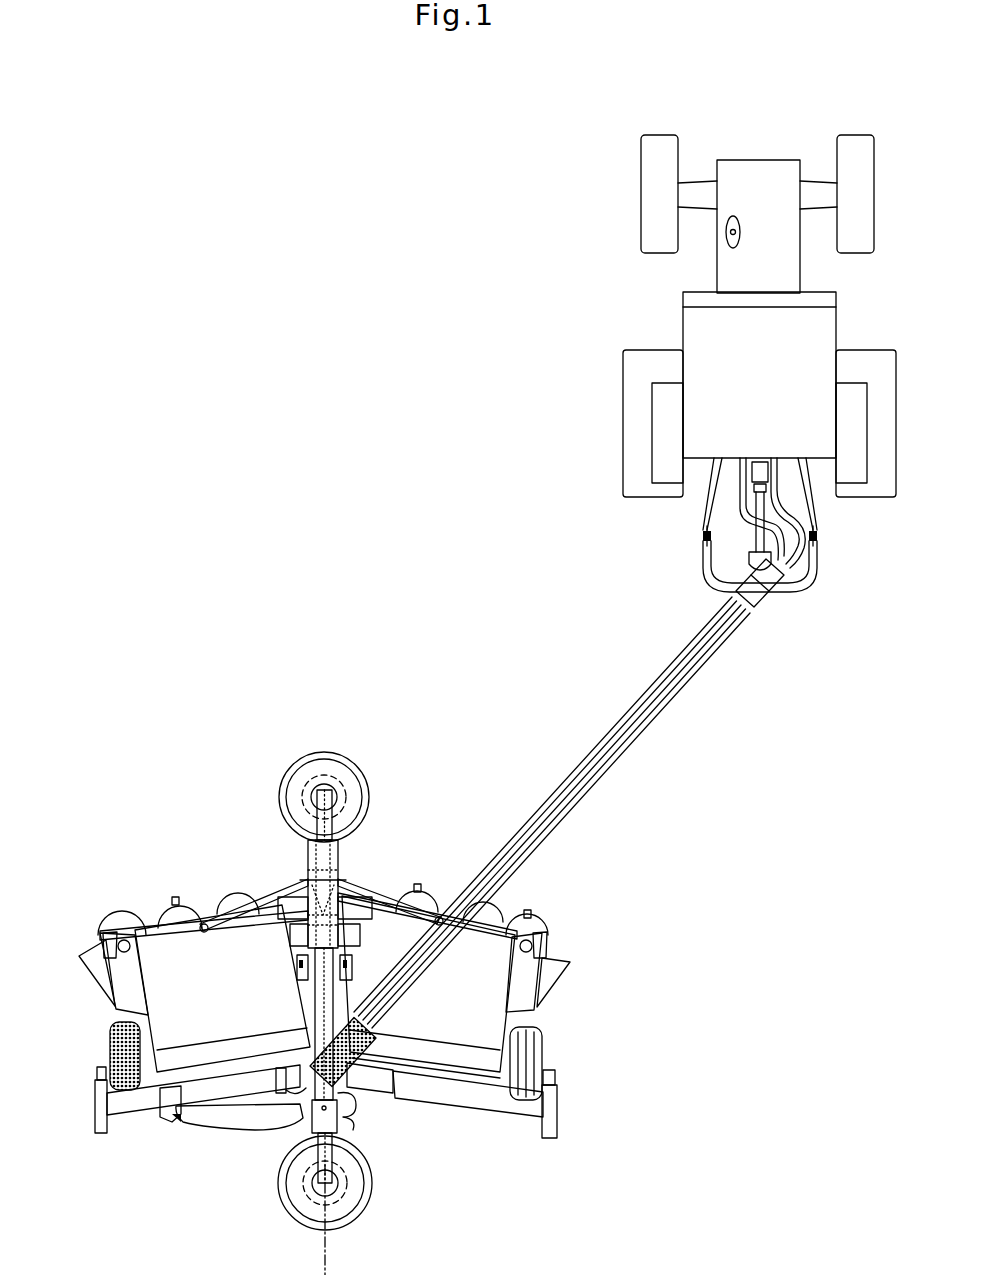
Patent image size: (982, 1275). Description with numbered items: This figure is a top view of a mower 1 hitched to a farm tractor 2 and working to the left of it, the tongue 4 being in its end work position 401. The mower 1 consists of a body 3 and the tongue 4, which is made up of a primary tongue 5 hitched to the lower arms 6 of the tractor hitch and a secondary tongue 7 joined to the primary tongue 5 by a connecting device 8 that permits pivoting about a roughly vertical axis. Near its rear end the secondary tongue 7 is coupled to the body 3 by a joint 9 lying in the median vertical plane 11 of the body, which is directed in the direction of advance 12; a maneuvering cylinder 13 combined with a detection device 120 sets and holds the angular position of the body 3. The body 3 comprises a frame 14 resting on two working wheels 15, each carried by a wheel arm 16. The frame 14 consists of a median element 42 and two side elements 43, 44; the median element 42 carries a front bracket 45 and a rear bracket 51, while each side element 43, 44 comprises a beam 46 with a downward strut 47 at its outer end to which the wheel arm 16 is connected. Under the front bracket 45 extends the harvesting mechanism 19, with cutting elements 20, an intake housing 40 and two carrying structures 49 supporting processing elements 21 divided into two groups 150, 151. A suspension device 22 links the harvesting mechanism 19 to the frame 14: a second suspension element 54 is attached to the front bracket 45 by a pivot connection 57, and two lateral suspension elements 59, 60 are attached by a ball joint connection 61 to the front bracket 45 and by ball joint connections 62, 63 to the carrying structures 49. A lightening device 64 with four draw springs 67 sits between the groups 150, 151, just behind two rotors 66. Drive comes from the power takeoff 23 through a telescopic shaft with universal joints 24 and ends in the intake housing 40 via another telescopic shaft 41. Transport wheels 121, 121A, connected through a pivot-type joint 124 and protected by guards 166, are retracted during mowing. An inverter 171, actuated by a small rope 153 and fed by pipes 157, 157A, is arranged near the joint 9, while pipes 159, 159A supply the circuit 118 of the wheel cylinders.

The mower 1 is at (355, 568).
The farm tractor 2 is at (690, 324).
The body 3 is at (626, 906).
The tongue 4 is at (644, 757).
The end work position (left) 401 is at (699, 750).
The primary tongue 5 is at (703, 560).
The lower arms 6 is at (706, 506).
The secondary tongue 7 is at (548, 807).
The connecting device 8 is at (732, 594).
The joint 9 is at (396, 1096).
The median vertical plane 11 is at (318, 1262).
The direction of advance 12 is at (171, 275).
The maneuvering cylinder 13 is at (200, 1118).
The frame 14 is at (451, 1118).
The working wheels 15 is at (110, 1032).
The wheel arm 16 is at (96, 1068).
The harvesting mechanism 19 is at (415, 797).
The cutting elements 20 is at (100, 930).
The processing elements 21 is at (136, 1015).
The suspension device 22 is at (247, 893).
The power takeoff 23 is at (761, 464).
The telescopic shaft with universal joints 24 is at (752, 547).
The intake housing 40 is at (293, 903).
The telescopic shaft with universal joints 41 is at (356, 935).
The median element 42 is at (300, 1007).
The side element 43 is at (150, 1118).
The side element 44 is at (486, 1120).
The front bracket 45 is at (336, 858).
The beam 46 is at (113, 1112).
The strut 47 is at (95, 1085).
The carrying structures 49 is at (157, 934).
The rear bracket 51 is at (306, 1137).
The second suspension element 54 is at (375, 884).
The pivot connection 57 is at (341, 881).
The lateral suspension element 59 is at (236, 910).
The lateral suspension element 60 is at (420, 907).
The ball joint connection 61 is at (300, 870).
The ball joint connection 62 is at (204, 931).
The ball joint connection 63 is at (448, 915).
The lightening device 64 is at (349, 945).
The rotors 66 is at (290, 931).
The draw springs 67 is at (296, 968).
The circuit 118 is at (222, 1062).
The detection device 120 is at (364, 1132).
The transport wheel 121 is at (352, 770).
The transport wheel 121A is at (289, 1201).
The pivot-type joint 124 is at (305, 880).
The group of processing elements 150 is at (165, 1003).
The group of processing elements 151 is at (436, 1006).
The small rope 153 is at (763, 603).
The pipe 157 is at (805, 524).
The pipe 157A is at (804, 556).
The pipe 159 is at (750, 518).
The pipe 159A is at (738, 477).
The guard 166 is at (313, 798).
The inverter 171 is at (353, 1052).